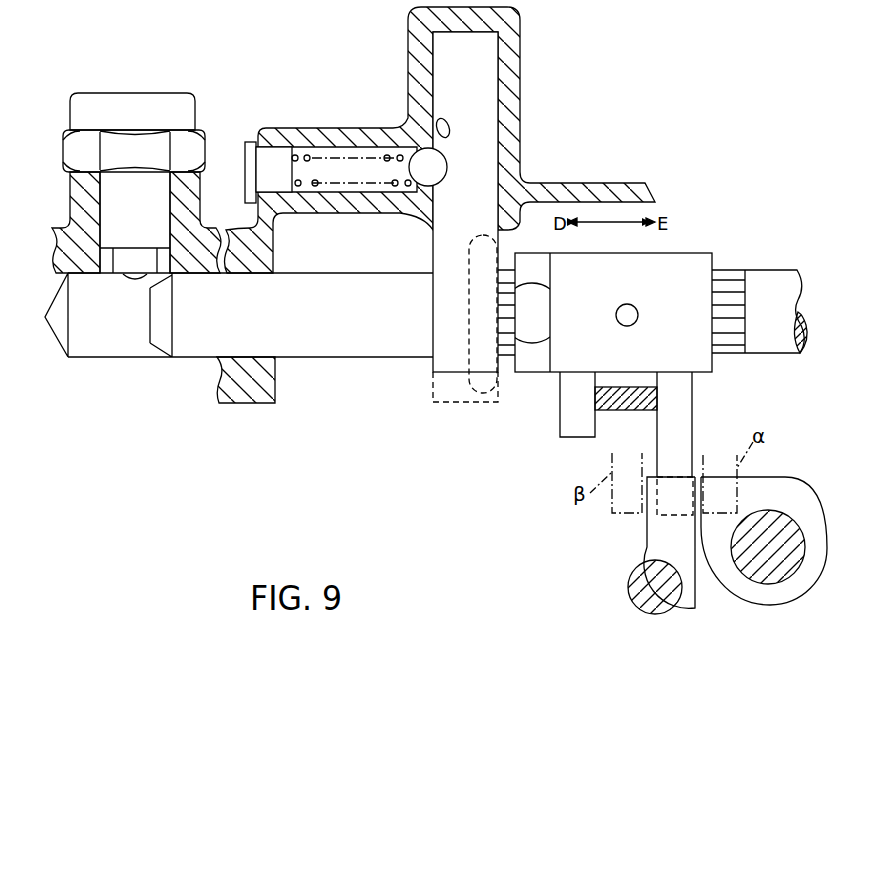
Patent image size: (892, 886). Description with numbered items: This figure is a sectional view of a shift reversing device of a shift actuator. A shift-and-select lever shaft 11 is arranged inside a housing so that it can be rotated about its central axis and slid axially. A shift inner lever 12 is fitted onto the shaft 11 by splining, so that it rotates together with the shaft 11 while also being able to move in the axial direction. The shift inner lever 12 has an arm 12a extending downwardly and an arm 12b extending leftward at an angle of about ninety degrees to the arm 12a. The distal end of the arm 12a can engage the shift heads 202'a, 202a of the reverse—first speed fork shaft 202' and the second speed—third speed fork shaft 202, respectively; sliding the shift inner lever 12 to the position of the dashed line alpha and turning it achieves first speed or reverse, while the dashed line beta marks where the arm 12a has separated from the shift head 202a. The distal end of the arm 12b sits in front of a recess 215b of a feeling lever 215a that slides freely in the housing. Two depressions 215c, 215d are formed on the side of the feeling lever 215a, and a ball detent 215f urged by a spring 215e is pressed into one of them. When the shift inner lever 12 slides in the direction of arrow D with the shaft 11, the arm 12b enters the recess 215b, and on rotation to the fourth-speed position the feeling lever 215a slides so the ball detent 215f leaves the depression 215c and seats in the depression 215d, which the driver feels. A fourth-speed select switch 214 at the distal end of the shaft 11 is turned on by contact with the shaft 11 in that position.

The shift-and-select lever shaft 11 is at (770, 277).
The shift inner lever 12 is at (697, 263).
The arm 12a is at (686, 427).
The arm 12b is at (530, 330).
The fourth-speed select switch 214 is at (108, 200).
The feeling lever 215a is at (447, 257).
The recess 215b is at (487, 370).
The depression 215c is at (434, 181).
The depression 215d is at (447, 128).
The spring 215e is at (332, 155).
The ball detent 215f is at (417, 160).
The second speed—third speed fork shaft 202 is at (614, 587).
The shift head 202a is at (647, 537).
The reverse—first speed fork shaft 202' is at (797, 547).
The shift head 202'a is at (764, 521).